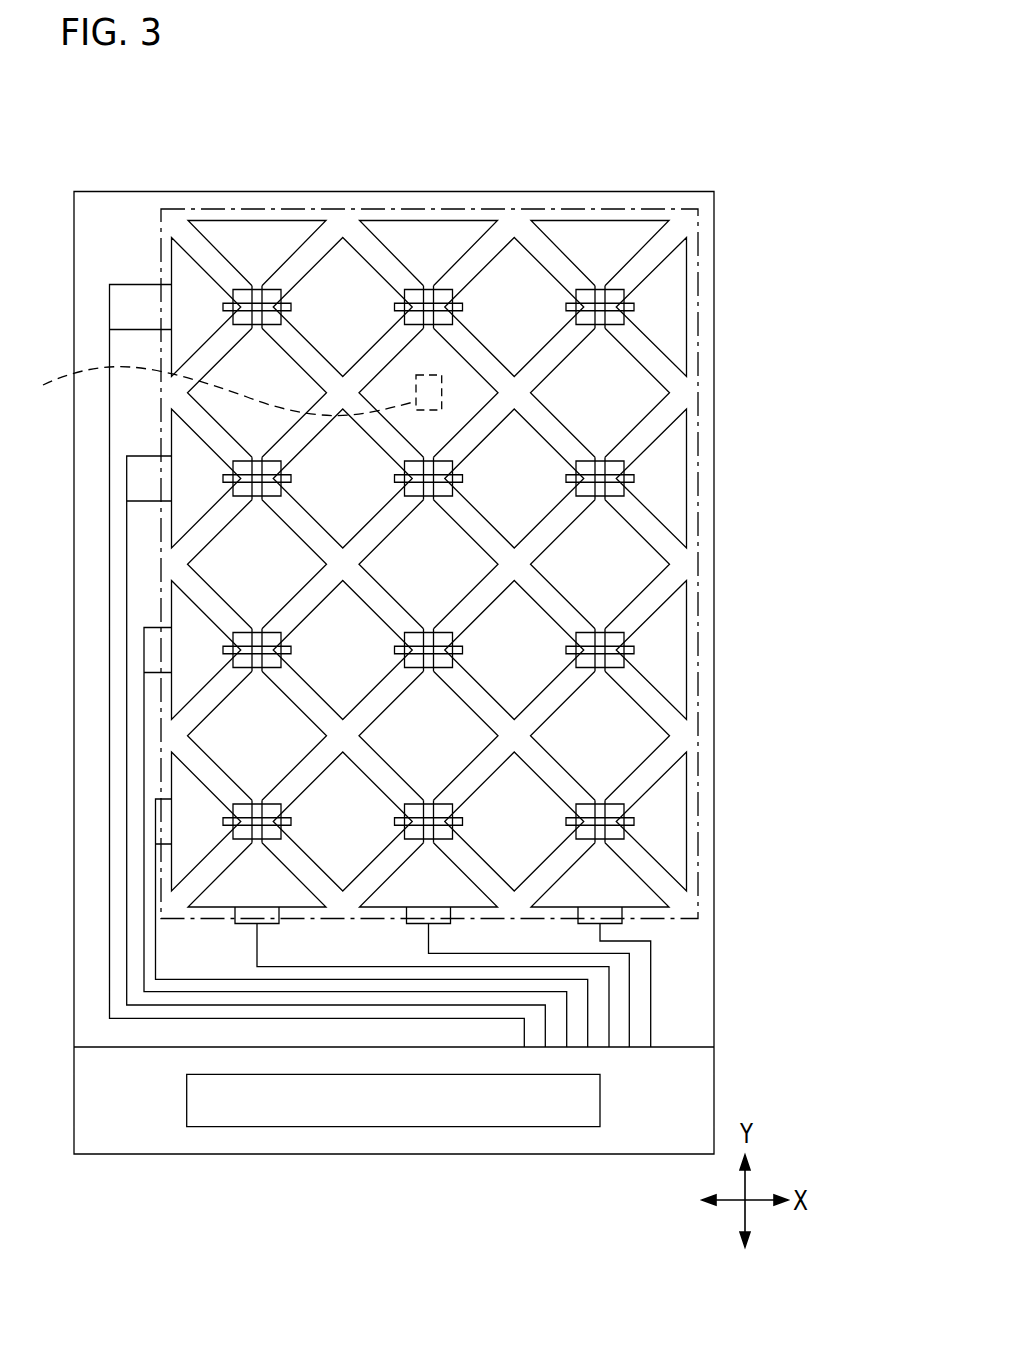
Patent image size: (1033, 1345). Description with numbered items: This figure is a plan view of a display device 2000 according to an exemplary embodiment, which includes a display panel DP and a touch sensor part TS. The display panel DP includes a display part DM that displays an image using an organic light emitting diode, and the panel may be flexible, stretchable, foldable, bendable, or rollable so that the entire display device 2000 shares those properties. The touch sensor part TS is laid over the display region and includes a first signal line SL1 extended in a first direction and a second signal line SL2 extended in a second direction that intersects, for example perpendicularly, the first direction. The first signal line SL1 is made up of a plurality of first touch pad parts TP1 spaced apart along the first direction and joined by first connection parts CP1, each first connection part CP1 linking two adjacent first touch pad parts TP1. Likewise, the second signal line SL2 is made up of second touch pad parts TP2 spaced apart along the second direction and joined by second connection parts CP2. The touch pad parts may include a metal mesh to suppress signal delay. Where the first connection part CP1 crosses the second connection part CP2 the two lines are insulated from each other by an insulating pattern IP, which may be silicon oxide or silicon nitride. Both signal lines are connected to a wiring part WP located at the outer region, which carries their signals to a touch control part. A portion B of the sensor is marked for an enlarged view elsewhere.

The display device 2000 is at (450, 54).
The display panel DP is at (708, 263).
The display part DM is at (698, 528).
The wiring part WP is at (118, 310).
The portion B is at (235, 391).
The touch sensor part TS is at (775, 343).
The first signal line SL1 is at (613, 362).
The second signal line SL2 is at (387, 127).
The first touch pad part TP1 is at (620, 590).
The first connection part CP1 is at (620, 803).
The second touch pad part TP2 is at (320, 272).
The second connection part CP2 is at (415, 290).
The insulating pattern IP is at (445, 290).